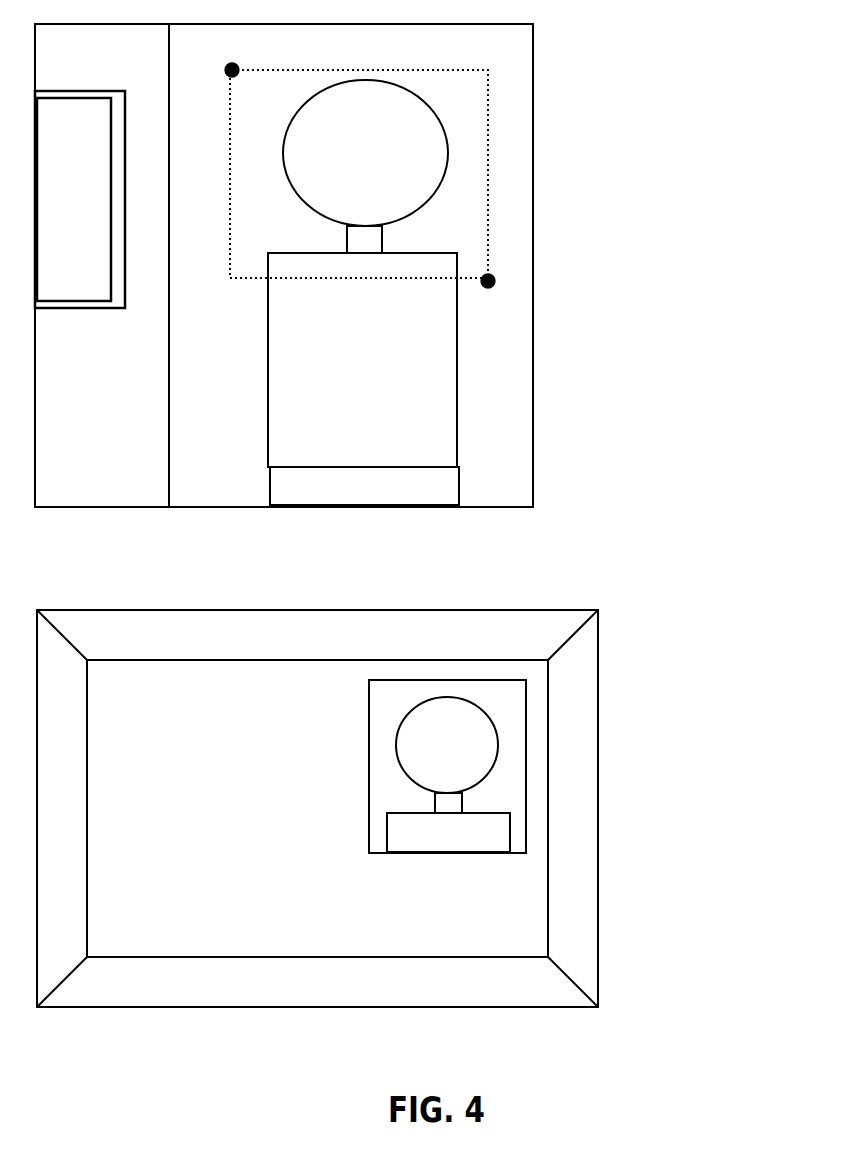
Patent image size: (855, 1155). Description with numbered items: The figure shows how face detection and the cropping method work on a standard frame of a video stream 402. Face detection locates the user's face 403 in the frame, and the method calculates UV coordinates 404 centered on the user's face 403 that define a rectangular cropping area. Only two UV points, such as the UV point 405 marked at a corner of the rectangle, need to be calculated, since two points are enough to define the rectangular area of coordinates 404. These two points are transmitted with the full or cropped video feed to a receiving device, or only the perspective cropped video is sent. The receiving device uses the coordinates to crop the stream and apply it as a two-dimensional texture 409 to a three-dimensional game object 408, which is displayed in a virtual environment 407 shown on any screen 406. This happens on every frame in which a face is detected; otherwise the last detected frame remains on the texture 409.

The standard frame of a video stream 402 is at (503, 388).
The user's face 403 is at (419, 155).
The UV coordinates 404 is at (466, 86).
The UV point 405 is at (511, 283).
The screen 406 is at (586, 932).
The virtual environment 407 is at (498, 883).
The 3D game object 408 is at (534, 805).
The 2D texture 409 is at (481, 739).